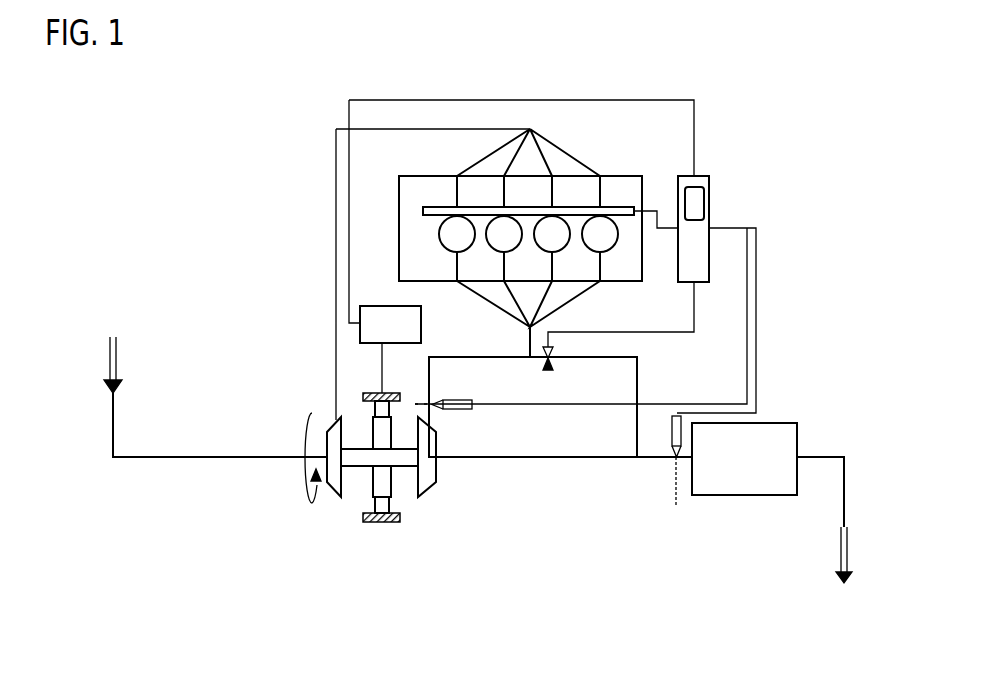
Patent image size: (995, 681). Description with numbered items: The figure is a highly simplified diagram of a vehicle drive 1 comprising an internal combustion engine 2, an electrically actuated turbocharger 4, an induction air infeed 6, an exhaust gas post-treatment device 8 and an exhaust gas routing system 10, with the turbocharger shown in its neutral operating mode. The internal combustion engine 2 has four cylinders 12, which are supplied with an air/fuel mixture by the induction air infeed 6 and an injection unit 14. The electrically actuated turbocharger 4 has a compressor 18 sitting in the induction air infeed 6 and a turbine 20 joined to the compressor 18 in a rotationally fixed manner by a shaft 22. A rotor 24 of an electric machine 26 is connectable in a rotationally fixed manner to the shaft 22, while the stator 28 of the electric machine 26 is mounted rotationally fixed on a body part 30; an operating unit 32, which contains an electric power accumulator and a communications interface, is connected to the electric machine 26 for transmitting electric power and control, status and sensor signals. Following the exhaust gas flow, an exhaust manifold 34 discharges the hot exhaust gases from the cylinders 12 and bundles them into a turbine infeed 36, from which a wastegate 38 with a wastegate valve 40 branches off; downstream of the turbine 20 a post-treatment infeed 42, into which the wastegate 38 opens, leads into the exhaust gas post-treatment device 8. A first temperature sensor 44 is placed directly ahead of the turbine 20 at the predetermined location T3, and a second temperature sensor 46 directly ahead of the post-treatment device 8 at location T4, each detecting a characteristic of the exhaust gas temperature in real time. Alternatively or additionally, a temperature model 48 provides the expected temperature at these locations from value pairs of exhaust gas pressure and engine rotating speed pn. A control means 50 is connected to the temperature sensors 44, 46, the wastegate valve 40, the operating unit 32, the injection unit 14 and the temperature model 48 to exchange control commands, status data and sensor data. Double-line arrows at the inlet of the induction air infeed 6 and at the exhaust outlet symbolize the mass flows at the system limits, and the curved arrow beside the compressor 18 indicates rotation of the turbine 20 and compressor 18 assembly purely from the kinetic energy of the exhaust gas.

The vehicle drive 1 is at (822, 62).
The internal combustion engine 2 is at (618, 168).
The electrically actuated turbocharger 4 is at (328, 487).
The induction air infeed 6 is at (154, 450).
The exhaust gas post-treatment device 8 is at (744, 459).
The exhaust gas routing system 10 is at (523, 436).
The cylinder 12 is at (425, 232).
The injection unit 14 is at (415, 211).
The compressor 18 is at (336, 500).
The turbine 20 is at (428, 499).
The shaft 22 is at (360, 476).
The rotor 24 is at (366, 427).
The electric machine 26 is at (382, 548).
The stator 28 is at (383, 522).
The body part 30 is at (368, 527).
The operating unit 32 is at (390, 349).
The exhaust manifold 34 is at (468, 298).
The turbine infeed 36 is at (486, 366).
The wastegate 38 is at (588, 366).
The wastegate valve 40 is at (548, 381).
The post-treatment infeed 42 is at (563, 468).
The first temperature sensor 44 is at (452, 416).
The second temperature sensor 46 is at (664, 441).
The temperature model 48 is at (714, 204).
The control means 50 is at (693, 229).
The predetermined location T3 is at (418, 403).
The predetermined location T4 is at (676, 507).
The exhaust gas pressure p and rotating speed n pn is at (462, 228).